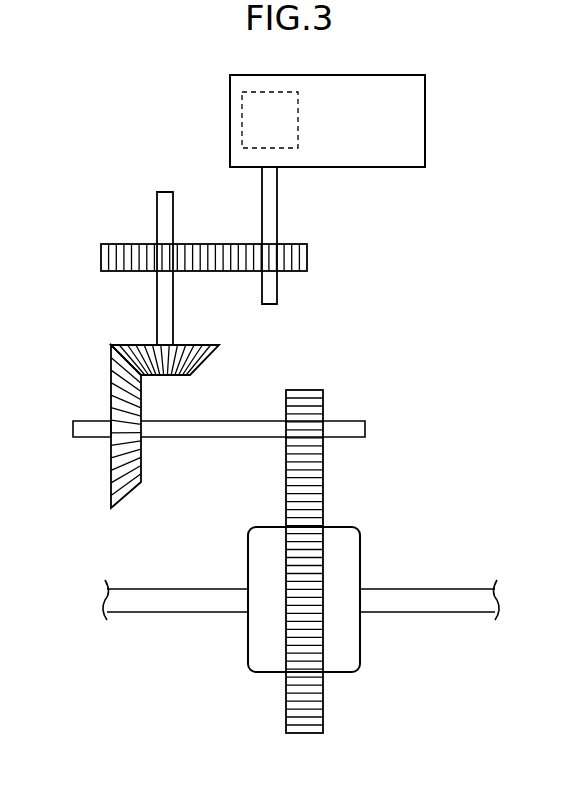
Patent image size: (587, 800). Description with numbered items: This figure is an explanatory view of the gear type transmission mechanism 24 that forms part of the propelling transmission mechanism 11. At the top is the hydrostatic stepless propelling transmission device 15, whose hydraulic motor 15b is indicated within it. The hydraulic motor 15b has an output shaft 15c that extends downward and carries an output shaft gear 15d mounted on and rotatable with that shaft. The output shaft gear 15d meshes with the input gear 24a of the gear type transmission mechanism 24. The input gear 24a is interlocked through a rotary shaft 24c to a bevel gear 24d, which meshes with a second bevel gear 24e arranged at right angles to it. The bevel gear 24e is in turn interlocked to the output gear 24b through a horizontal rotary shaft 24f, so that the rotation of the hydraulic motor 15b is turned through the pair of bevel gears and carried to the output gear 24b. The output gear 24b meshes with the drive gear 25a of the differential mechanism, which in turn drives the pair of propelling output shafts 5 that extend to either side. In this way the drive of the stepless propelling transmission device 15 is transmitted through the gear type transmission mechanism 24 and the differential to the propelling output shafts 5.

The propelling transmission mechanism 11 is at (433, 323).
The hydrostatic stepless propelling transmission device 15 is at (425, 135).
The hydraulic motor 15b is at (270, 127).
The output shaft 15c is at (272, 210).
The output shaft gear 15d is at (227, 234).
The gear type transmission mechanism 24 is at (171, 447).
The input gear 24a is at (123, 252).
The output gear 24b is at (309, 397).
The rotary shaft 24c is at (167, 318).
The bevel gear 24d is at (200, 363).
The bevel gear 24e is at (122, 470).
The rotary shaft 24f is at (210, 428).
The drive gear 25a is at (307, 725).
The propelling output shafts 5 is at (162, 597).